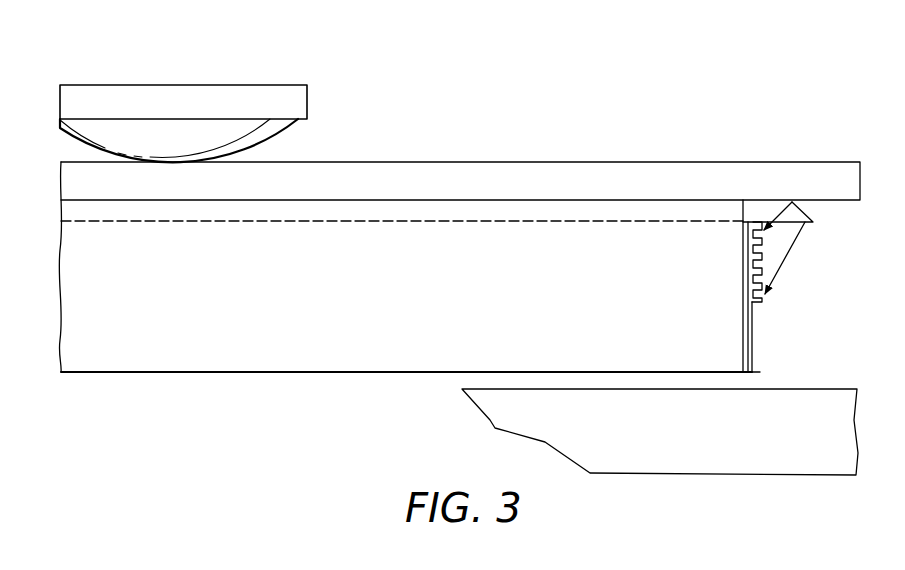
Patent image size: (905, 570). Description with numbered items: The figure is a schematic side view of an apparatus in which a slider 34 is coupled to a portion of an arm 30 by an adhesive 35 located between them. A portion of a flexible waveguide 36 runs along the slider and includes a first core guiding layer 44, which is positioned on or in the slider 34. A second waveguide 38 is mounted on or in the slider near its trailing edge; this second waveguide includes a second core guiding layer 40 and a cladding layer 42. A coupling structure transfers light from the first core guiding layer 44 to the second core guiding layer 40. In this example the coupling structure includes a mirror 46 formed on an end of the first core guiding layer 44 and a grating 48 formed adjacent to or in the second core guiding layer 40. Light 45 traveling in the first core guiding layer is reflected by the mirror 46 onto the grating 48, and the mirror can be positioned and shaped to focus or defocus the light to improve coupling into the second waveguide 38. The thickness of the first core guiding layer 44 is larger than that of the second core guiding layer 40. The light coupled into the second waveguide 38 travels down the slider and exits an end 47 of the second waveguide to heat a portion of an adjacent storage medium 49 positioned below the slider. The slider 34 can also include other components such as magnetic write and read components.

The arm 30 is at (200, 100).
The adhesive 35 is at (240, 130).
The flexible waveguide 36 is at (450, 210).
The first core guiding layer 44 is at (598, 208).
The slider 34 is at (210, 362).
The cladding layer 42 is at (743, 330).
The second core guiding layer 40 is at (752, 353).
The end of the second waveguide 47 is at (752, 372).
The light 45 is at (778, 243).
The mirror 46 is at (797, 212).
The grating 48 is at (762, 255).
The second waveguide 38 is at (774, 325).
The storage medium 49 is at (752, 460).